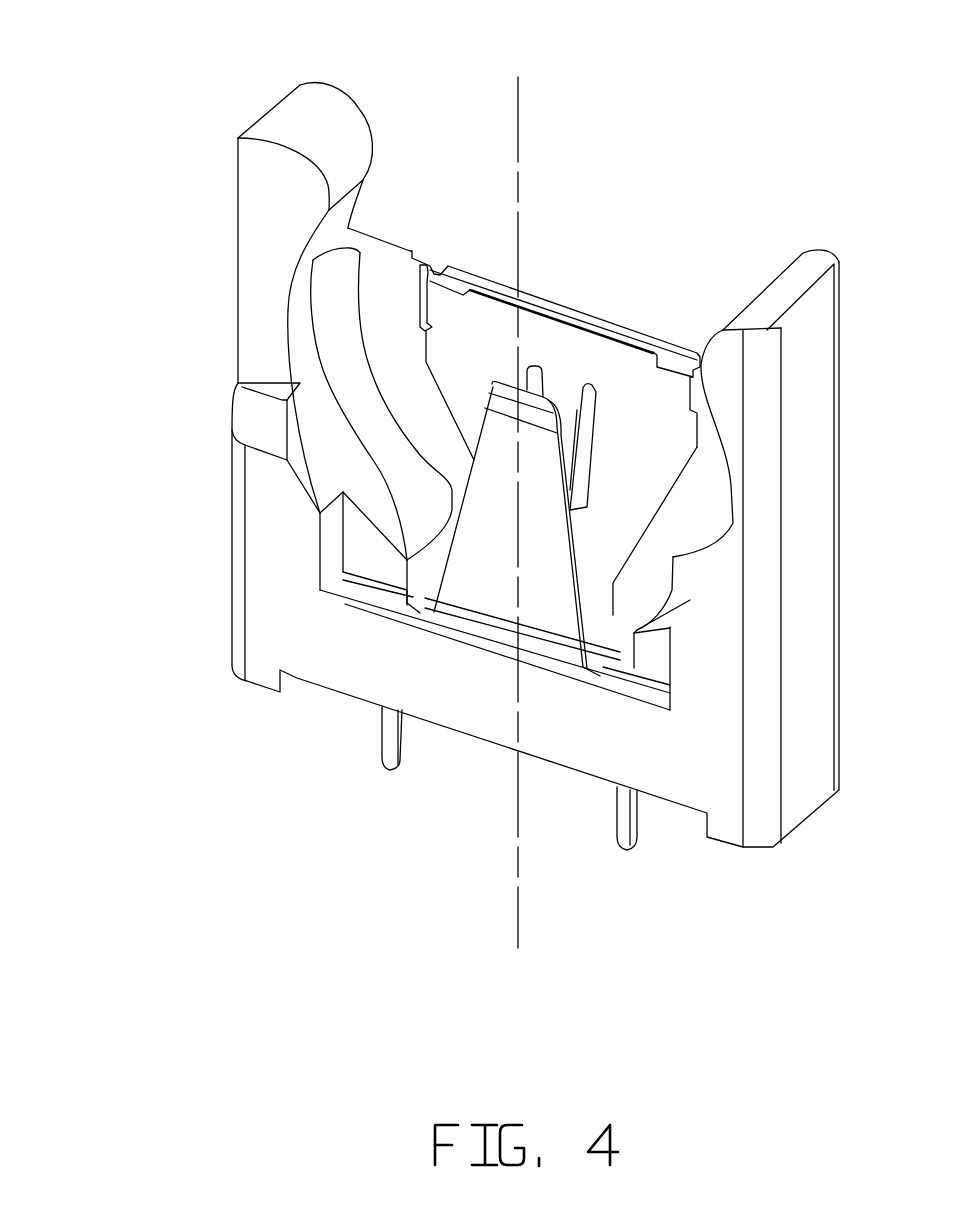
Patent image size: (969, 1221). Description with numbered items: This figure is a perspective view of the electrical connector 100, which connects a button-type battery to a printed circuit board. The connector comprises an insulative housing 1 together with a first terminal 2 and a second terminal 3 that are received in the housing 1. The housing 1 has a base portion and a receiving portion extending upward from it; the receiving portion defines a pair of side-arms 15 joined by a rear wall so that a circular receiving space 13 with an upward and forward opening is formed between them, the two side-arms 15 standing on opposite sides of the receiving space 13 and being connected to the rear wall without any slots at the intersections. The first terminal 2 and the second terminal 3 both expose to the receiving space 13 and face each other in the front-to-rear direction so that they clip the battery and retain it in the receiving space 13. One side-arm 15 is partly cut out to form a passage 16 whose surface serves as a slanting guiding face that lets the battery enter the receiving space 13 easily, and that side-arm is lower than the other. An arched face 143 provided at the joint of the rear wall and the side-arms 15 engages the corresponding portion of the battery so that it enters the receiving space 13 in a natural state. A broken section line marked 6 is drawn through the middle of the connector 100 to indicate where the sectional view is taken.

The electrical connector 100 is at (660, 74).
The insulative housing 1 is at (278, 512).
The first terminal 2 is at (495, 540).
The second terminal 3 is at (593, 370).
The receiving space 13 is at (640, 417).
The side-arms 15 is at (317, 120).
The passage 16 is at (267, 230).
The arched face 143 is at (340, 313).
The section line 6- 6 is at (518, 77).